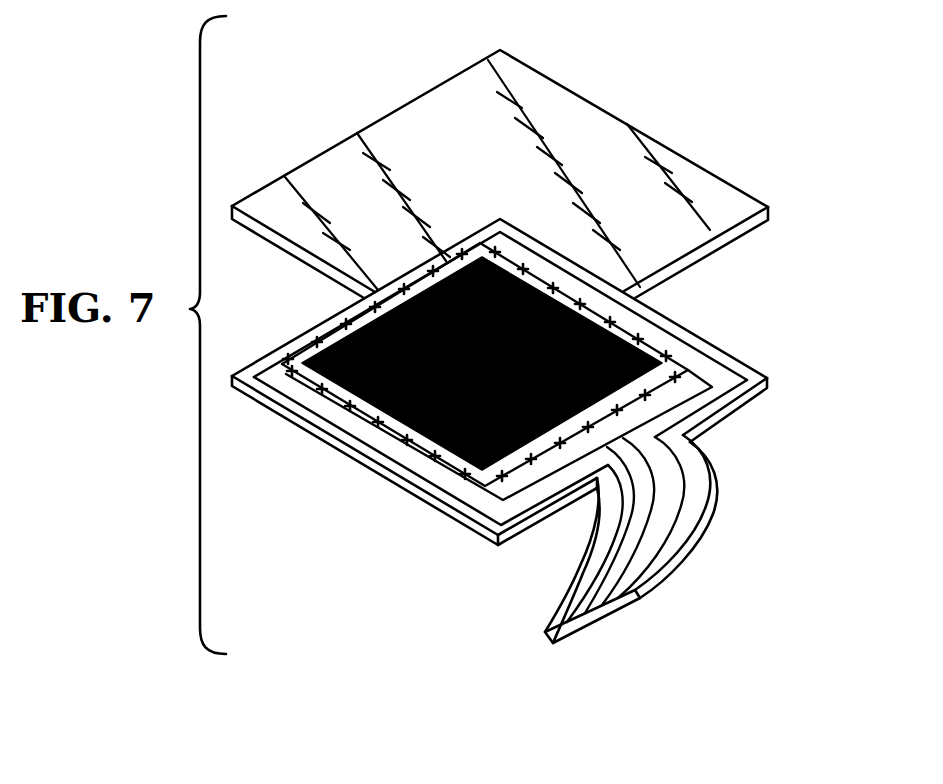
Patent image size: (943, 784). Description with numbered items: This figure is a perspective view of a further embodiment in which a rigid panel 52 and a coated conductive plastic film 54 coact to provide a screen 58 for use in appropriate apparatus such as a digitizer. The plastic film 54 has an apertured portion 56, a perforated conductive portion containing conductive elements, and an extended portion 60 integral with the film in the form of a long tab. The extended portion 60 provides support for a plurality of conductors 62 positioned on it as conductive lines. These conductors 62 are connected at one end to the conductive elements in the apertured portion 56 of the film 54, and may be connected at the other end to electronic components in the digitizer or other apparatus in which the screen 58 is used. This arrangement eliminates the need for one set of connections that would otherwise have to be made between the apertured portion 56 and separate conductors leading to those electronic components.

The rigid panel 52 is at (613, 117).
The coated conductive plastic film 54 is at (752, 367).
The apertured portion 56 is at (418, 437).
The screen 58 is at (748, 279).
The extended portion 60 is at (548, 608).
The conductors 62 is at (662, 527).